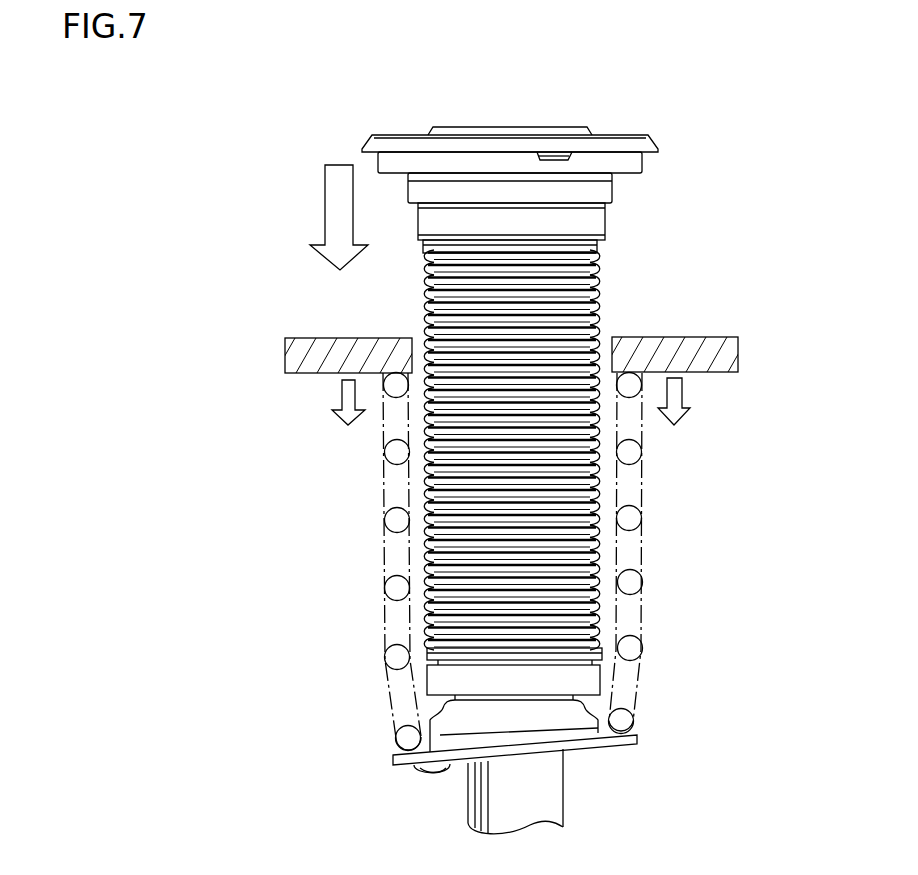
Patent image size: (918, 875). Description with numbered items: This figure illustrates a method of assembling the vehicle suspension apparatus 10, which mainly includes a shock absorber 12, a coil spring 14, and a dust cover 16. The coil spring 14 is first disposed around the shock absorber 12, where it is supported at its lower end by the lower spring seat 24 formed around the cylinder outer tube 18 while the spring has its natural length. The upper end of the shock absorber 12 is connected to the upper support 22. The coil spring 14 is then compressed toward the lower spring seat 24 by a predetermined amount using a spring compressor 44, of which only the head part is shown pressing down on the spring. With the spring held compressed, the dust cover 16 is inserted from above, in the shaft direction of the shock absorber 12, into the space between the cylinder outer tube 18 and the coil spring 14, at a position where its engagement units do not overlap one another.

The vehicle suspension apparatus 10 is at (710, 114).
The shock absorber 12 is at (563, 797).
The coil spring 14 is at (642, 582).
The dust cover 16 is at (599, 298).
The cylinder outer tube 18 is at (455, 701).
The upper support 22 is at (622, 137).
The lower spring seat 24 is at (638, 741).
The spring compressor 44 is at (725, 336).